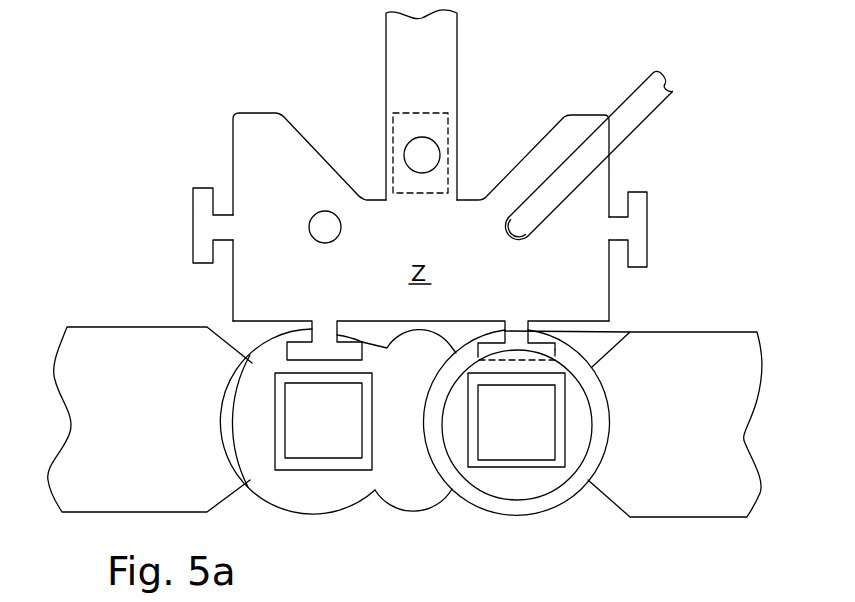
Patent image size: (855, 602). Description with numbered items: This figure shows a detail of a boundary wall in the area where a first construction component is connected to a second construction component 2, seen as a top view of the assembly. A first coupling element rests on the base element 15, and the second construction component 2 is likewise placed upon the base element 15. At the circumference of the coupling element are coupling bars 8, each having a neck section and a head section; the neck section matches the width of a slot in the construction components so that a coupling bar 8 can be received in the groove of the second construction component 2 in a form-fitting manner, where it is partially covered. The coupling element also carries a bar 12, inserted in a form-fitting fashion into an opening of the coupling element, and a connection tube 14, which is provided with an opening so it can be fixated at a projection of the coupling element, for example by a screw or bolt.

The second construction component 2 is at (716, 316).
The coupling bar 8 is at (200, 223).
The bar 12 is at (634, 113).
The connection tube 14 is at (435, 57).
The base element 15 is at (80, 307).